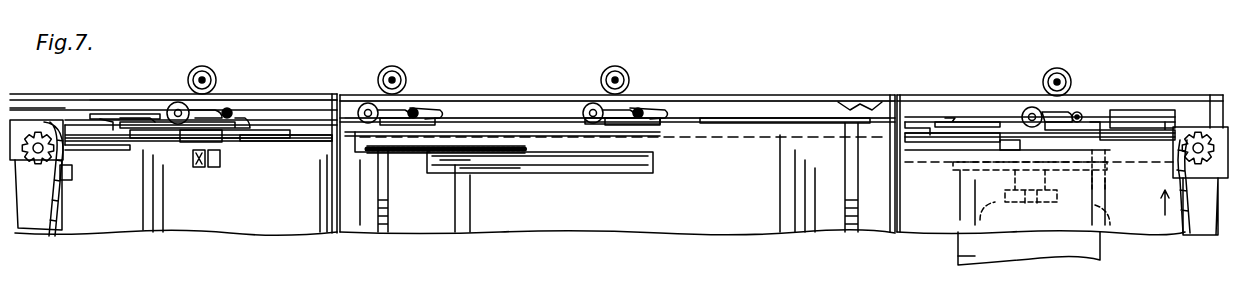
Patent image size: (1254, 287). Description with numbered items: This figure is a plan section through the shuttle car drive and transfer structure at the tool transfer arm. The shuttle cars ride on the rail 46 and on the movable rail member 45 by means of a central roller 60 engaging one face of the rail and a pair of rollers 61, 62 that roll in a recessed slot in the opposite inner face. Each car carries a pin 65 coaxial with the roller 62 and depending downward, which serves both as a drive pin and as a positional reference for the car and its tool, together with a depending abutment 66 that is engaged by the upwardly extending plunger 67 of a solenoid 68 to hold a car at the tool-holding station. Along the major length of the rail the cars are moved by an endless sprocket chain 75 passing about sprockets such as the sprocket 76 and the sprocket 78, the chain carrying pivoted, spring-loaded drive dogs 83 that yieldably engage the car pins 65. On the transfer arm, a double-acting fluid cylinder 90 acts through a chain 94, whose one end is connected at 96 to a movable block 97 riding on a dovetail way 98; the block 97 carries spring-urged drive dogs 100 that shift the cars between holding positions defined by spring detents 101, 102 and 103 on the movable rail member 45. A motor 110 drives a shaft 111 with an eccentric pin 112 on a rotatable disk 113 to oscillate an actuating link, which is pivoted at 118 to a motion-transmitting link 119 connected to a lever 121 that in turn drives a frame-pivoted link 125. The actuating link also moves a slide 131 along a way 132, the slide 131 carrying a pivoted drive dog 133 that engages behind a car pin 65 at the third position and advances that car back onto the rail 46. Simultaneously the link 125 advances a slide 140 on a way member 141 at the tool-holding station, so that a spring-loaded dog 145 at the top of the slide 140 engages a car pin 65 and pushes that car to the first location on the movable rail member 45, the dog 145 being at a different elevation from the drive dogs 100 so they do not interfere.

The movable rail member 45 is at (758, 96).
The rail 46 is at (106, 99).
The central roller 60 is at (204, 66).
The roller 61 is at (366, 102).
The roller 62 is at (1080, 110).
The pin 65 is at (228, 108).
The abutment 66 is at (197, 150).
The plunger 67 is at (212, 168).
The solenoid 68 is at (222, 163).
The sprocket chain 75 is at (1180, 220).
The sprocket 76 is at (1204, 140).
The sprocket 78 is at (48, 122).
The drive dog 83 is at (74, 180).
The double-acting fluid cylinder 90 is at (538, 152).
The chain 94 is at (420, 154).
The chain end connection 96 is at (360, 152).
The movable block 97 is at (504, 118).
The dovetail way 98 is at (758, 126).
The drive dogs 100 is at (413, 108).
The spring detent 101 is at (432, 110).
The spring detent 102 is at (640, 112).
The spring detent 103 is at (870, 106).
The motor 110 is at (958, 257).
The shaft 111 is at (1031, 197).
The eccentric pin 112 is at (1110, 145).
The rotatable disk 113 is at (1100, 182).
The pivot 118 is at (1005, 150).
The motion-transmitting link 119 is at (307, 143).
The lever 121 is at (257, 125).
The link 125 is at (168, 140).
The slide 131 is at (1150, 124).
The way 132 is at (906, 117).
The pivoted drive dog 133 is at (1008, 125).
The slide 140 is at (100, 140).
The way member 141 is at (297, 118).
The spring-loaded dog 145 is at (170, 112).